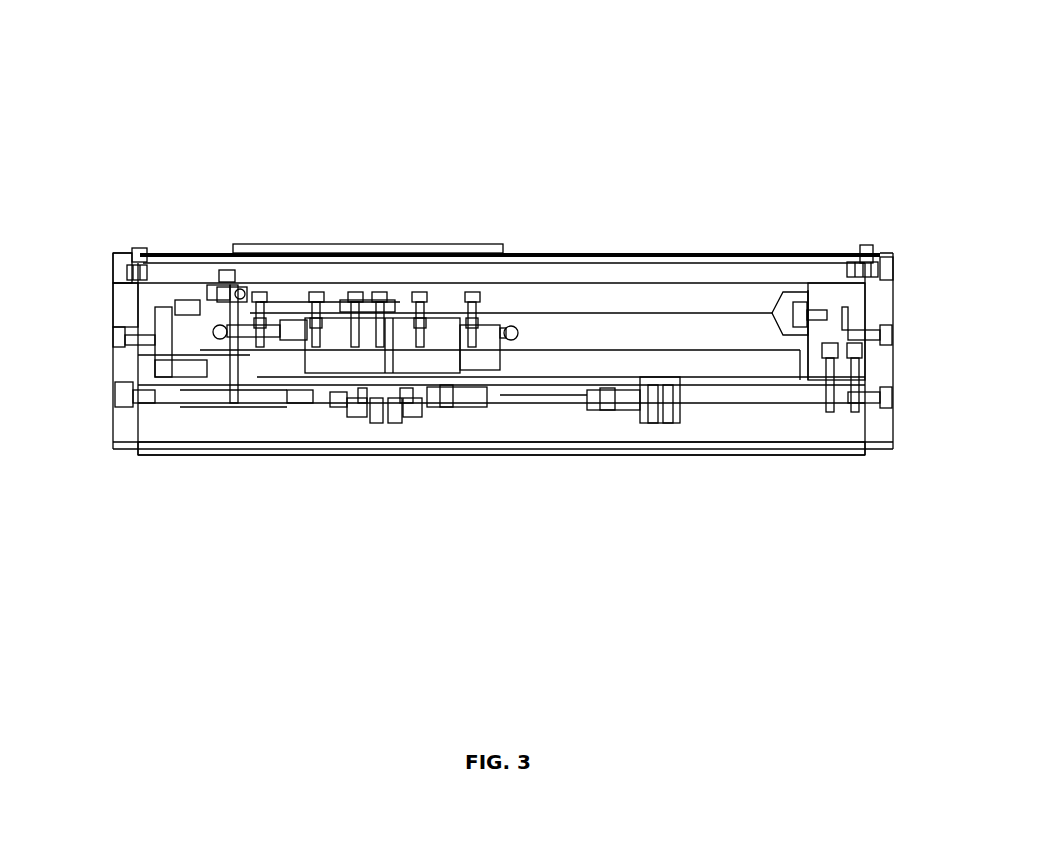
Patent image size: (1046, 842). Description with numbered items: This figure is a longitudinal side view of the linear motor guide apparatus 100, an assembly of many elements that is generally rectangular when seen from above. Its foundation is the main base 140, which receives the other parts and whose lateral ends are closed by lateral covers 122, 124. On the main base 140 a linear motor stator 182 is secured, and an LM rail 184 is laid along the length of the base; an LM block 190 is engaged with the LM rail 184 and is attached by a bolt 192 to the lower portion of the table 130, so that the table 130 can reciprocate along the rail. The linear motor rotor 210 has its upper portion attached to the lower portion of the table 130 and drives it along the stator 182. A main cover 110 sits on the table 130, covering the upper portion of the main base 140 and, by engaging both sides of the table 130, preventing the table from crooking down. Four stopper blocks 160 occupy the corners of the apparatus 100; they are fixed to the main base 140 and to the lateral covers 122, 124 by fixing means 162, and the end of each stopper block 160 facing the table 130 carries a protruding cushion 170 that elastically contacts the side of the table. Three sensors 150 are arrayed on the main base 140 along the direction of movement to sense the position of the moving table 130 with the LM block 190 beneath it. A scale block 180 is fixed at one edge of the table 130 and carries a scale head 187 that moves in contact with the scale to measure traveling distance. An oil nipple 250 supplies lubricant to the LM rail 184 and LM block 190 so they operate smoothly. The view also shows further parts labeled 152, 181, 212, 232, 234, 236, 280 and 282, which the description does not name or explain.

The linear motor guide apparatus 100 is at (566, 30).
The main cover 110 is at (668, 263).
The lateral cover 122 is at (123, 300).
The lateral cover 124 is at (882, 300).
The table 130 is at (452, 244).
The main base 140 is at (273, 450).
The sensors 150 is at (297, 449).
The fastening bolt 152 is at (360, 450).
The stopper blocks 160 is at (832, 297).
The fixing means 162 is at (123, 337).
The protruding cushion 170 is at (787, 292).
The scale block 180 is at (206, 300).
The shaft support 181 is at (173, 327).
The linear motor stator 182 is at (522, 449).
The LM rail 184 is at (583, 449).
The scale head 187 is at (186, 310).
The LM block 190 is at (295, 318).
The bolt 192 is at (257, 292).
The linear motor rotor 210 is at (370, 295).
The fixing bolt 212 is at (350, 300).
The lower adjusting screw 232 is at (123, 449).
The corner block 234 is at (118, 252).
The upper bolt 236 is at (140, 258).
The oil nipple 250 is at (508, 333).
The connector 280 is at (215, 285).
The connector pin 282 is at (226, 280).